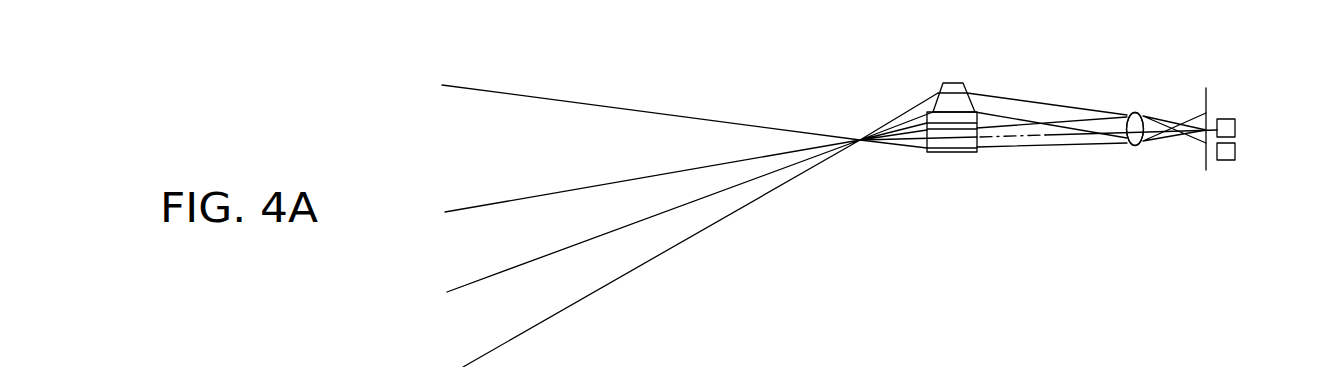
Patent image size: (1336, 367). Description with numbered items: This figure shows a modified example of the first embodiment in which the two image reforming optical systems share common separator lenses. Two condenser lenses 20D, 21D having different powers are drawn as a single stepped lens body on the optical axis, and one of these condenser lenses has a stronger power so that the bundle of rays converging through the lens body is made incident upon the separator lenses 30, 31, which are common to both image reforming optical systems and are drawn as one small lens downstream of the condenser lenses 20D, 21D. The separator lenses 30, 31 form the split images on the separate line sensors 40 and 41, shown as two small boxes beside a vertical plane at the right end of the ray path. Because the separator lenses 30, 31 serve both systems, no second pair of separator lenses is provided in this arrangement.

The condenser lens 21D is at (957, 83).
The condenser lens 20D is at (950, 152).
The separator lens 30 is at (1135, 112).
The separator lens 31 is at (1134, 98).
The line sensor 40 is at (1235, 128).
The line sensor 41 is at (1235, 152).